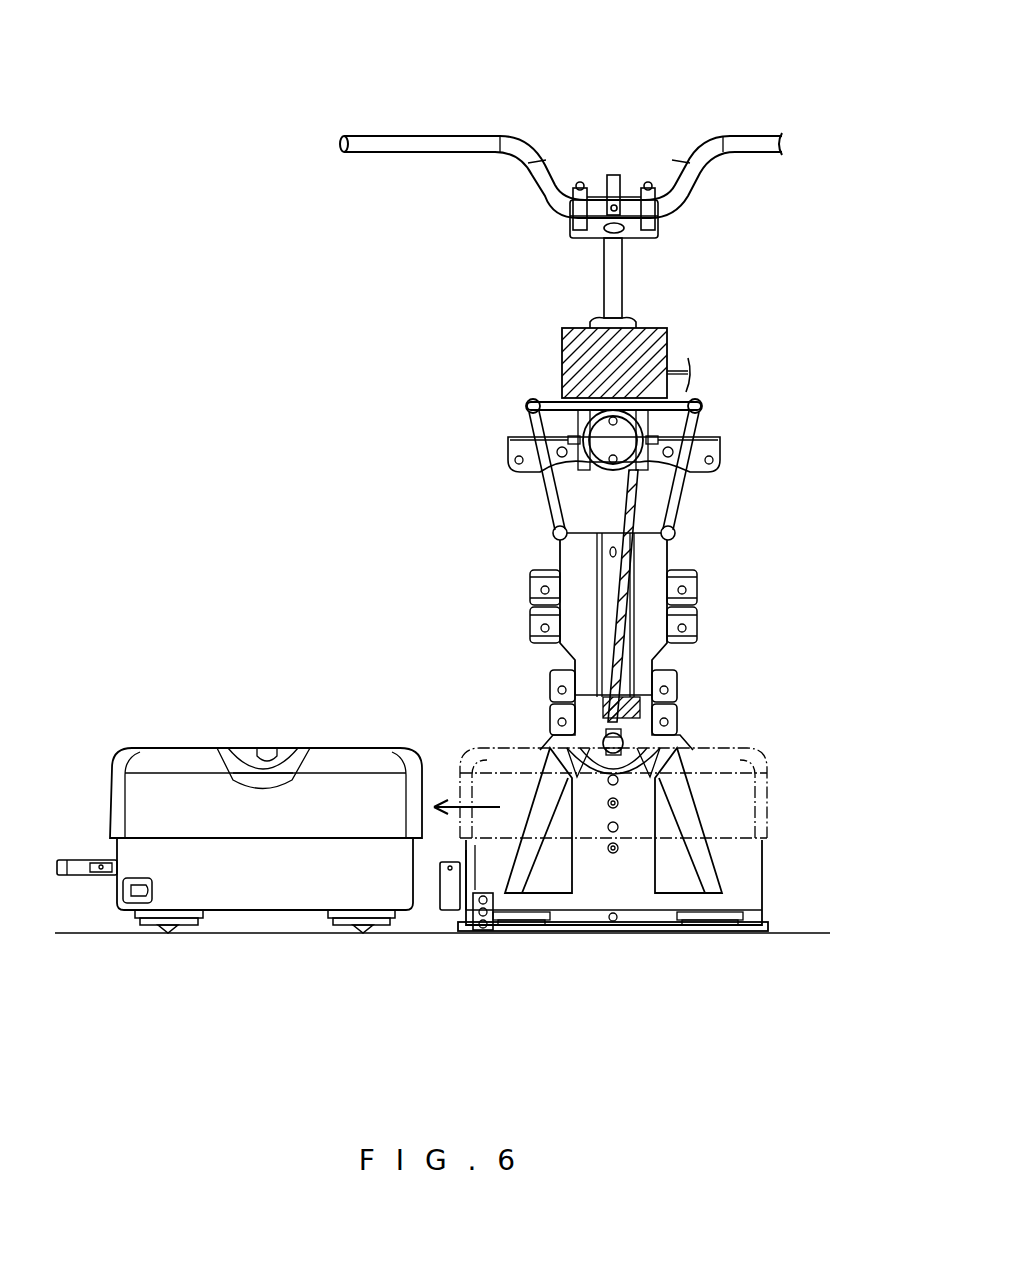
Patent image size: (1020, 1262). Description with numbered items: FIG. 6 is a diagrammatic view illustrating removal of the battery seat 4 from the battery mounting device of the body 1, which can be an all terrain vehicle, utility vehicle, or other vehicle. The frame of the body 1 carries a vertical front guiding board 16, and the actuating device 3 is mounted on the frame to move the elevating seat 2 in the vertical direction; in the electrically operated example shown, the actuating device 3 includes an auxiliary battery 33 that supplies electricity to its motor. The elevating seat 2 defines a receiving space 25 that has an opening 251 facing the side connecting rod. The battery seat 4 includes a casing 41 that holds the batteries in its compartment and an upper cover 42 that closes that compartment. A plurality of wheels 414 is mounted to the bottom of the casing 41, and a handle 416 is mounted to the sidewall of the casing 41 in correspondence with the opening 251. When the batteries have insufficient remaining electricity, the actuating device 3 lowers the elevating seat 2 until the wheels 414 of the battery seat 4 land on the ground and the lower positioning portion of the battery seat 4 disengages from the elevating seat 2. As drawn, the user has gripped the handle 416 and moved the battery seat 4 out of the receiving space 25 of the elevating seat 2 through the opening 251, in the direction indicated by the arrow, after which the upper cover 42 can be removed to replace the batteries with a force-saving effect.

The body 1 is at (467, 108).
The auxiliary battery 33 is at (622, 358).
The actuating device 3 is at (622, 437).
The front guiding board 16 is at (650, 574).
The elevating seat 2 is at (736, 814).
The receiving space 25 is at (672, 828).
The opening 251 is at (505, 790).
The battery seat 4 is at (294, 728).
The upper cover 42 is at (361, 764).
The casing 41 is at (257, 880).
The handle 416 is at (85, 872).
The wheels 414 is at (168, 933).